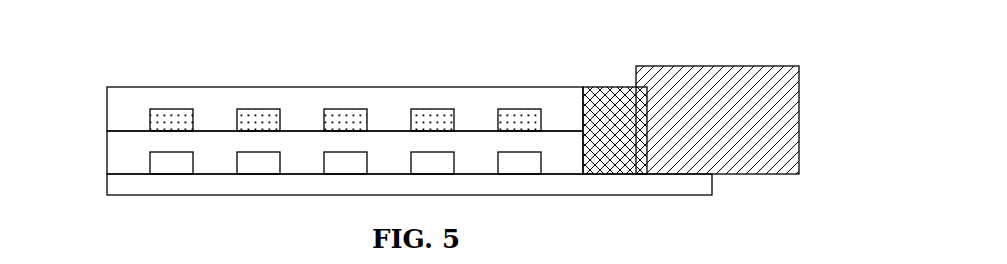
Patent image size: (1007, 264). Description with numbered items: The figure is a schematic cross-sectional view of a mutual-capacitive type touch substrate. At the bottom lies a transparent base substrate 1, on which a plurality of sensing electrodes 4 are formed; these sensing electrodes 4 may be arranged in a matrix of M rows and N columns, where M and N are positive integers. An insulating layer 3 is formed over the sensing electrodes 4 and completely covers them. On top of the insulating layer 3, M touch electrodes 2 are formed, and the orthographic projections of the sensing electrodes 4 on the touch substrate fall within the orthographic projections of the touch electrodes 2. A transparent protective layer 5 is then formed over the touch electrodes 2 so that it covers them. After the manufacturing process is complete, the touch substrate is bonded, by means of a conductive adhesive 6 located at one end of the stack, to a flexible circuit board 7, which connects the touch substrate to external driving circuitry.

The transparent base substrate 1 is at (107, 188).
The touch electrodes 2 is at (258, 108).
The insulating layer 3 is at (107, 152).
The sensing electrodes 4 is at (353, 152).
The transparent protective layer 5 is at (107, 112).
The conductive adhesive 6 is at (587, 88).
The flexible circuit board 7 is at (799, 129).